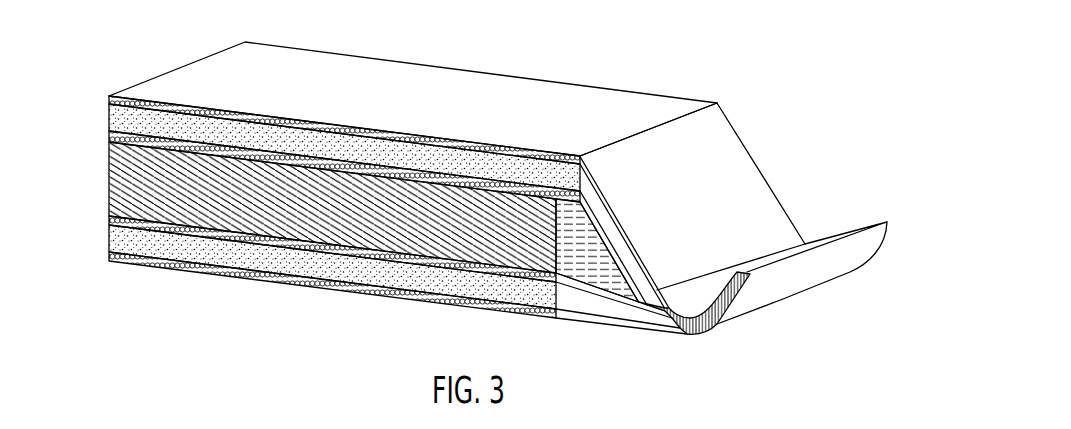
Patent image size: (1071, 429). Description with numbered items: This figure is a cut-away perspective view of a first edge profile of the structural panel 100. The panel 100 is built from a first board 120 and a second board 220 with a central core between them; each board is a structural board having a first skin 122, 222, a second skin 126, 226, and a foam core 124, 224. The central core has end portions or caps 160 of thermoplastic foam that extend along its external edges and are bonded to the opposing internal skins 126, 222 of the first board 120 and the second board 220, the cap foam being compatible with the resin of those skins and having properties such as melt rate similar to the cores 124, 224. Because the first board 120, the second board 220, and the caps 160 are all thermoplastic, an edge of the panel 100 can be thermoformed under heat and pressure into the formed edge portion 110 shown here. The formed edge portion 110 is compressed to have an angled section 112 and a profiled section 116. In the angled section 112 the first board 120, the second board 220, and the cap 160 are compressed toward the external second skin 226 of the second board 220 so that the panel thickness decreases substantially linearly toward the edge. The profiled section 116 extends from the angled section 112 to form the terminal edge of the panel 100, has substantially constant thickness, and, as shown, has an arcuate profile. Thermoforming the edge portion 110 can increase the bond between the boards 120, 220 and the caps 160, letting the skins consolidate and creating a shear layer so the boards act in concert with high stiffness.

The panel 100 is at (928, 389).
The formed edge portion 110 is at (887, 168).
The angled section 112 is at (753, 190).
The profiled section 116 is at (873, 257).
The first board 120 is at (557, 85).
The first skin 122 is at (109, 97).
The core 124 is at (108, 120).
The second skin 126 is at (108, 137).
The cap 160 is at (587, 262).
The second board 220 is at (377, 296).
The first skin 222 is at (108, 220).
The core 224 is at (108, 238).
The second skin 226 is at (108, 258).